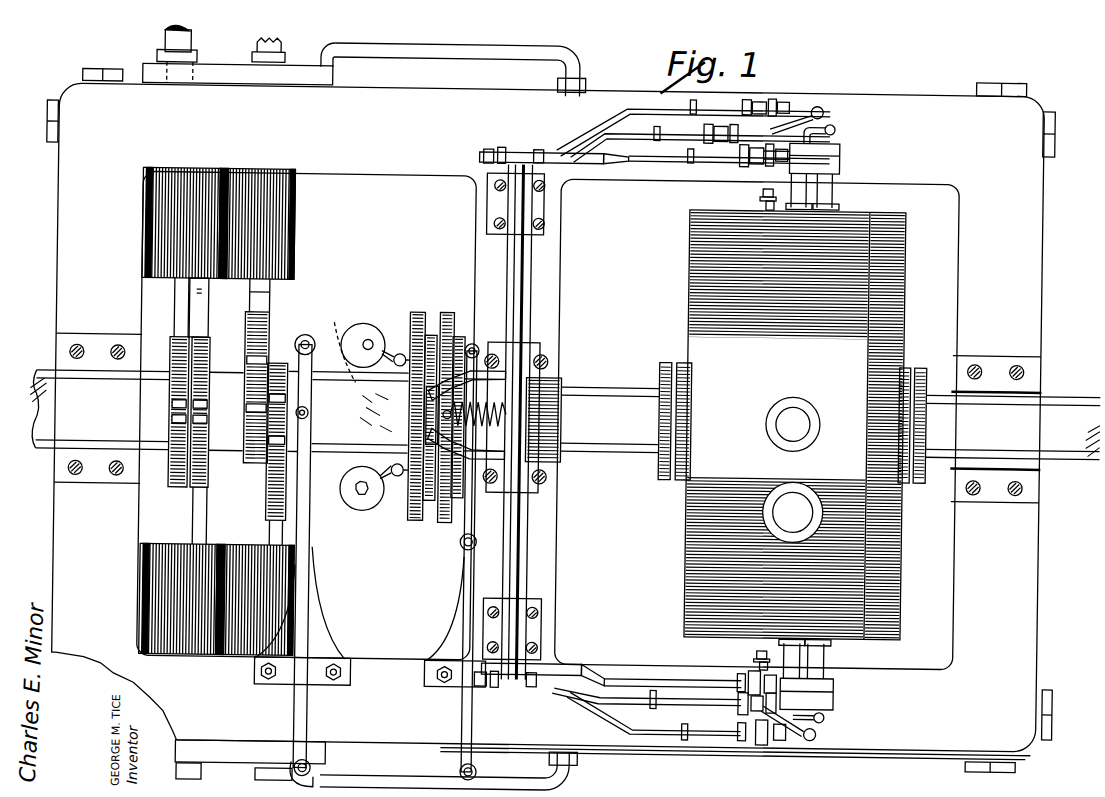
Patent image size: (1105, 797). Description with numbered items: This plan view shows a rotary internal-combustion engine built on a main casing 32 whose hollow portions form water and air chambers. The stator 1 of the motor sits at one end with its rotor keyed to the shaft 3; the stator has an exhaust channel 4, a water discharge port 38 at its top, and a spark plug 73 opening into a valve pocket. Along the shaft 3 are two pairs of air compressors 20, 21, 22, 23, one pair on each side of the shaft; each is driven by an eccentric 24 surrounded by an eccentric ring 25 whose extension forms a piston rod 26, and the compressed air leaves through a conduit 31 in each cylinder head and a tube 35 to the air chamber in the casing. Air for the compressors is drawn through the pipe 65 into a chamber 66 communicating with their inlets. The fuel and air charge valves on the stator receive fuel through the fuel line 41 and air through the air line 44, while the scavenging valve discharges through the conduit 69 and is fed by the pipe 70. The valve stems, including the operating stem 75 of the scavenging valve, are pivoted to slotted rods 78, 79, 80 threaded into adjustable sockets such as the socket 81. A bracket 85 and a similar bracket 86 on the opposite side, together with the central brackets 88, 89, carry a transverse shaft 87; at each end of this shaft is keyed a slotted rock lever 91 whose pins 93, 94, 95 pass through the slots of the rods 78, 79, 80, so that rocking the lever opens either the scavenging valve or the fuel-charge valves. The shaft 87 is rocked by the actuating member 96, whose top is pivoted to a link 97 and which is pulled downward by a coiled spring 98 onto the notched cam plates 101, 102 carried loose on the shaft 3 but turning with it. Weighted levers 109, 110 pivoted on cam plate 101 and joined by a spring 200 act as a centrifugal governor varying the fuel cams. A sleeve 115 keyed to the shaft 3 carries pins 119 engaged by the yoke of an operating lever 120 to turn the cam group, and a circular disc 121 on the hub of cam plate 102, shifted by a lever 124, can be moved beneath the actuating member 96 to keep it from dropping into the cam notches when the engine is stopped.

The stator 1 is at (795, 425).
The shaft 3 is at (636, 452).
The exhaust channel 4 is at (812, 500).
The air compressor 20 is at (257, 223).
The air compressor 21 is at (181, 222).
The air compressor 22 is at (255, 599).
The air compressor 23 is at (178, 598).
The eccentric 24 is at (218, 462).
The eccentric ring 25 is at (248, 352).
The piston rod 26 is at (248, 303).
The conduit 31 is at (225, 63).
The main casing 32 is at (55, 578).
The tube 35 is at (375, 56).
The port 38 is at (806, 408).
The fuel line 41 is at (884, 749).
The air line 44 is at (822, 732).
The pipe 65 is at (152, 36).
The chamber 66 is at (163, 88).
The conduit 69 is at (830, 670).
The pipe 70 is at (832, 125).
The spark plug 73 is at (758, 650).
The operating stem 75 is at (760, 190).
The rod 78 is at (630, 160).
The rod 79 is at (625, 114).
The rod 80 is at (648, 140).
The socket 81 is at (712, 160).
The bracket 85 is at (545, 628).
The bearing plate 86 is at (542, 203).
The shaft 87 is at (531, 272).
The central bracket 88 is at (556, 483).
The central bracket 89 is at (552, 356).
The rock lever 91 is at (540, 665).
The pin 93 is at (535, 150).
The pin 94 is at (484, 150).
The pin 95 is at (498, 148).
The actuating member 96 is at (563, 383).
The link 97 is at (466, 430).
The coiled spring 98 is at (500, 372).
The cam plate 101 is at (411, 500).
The cam plate 102 is at (452, 528).
The weighted lever 109 is at (397, 355).
The weighted lever 110 is at (366, 326).
The sleeve 115 is at (302, 436).
The pins 119 is at (311, 410).
The operating lever 120 is at (312, 572).
The circular disc 121 is at (470, 345).
The lever 124 is at (466, 577).
The spring 200 is at (353, 370).